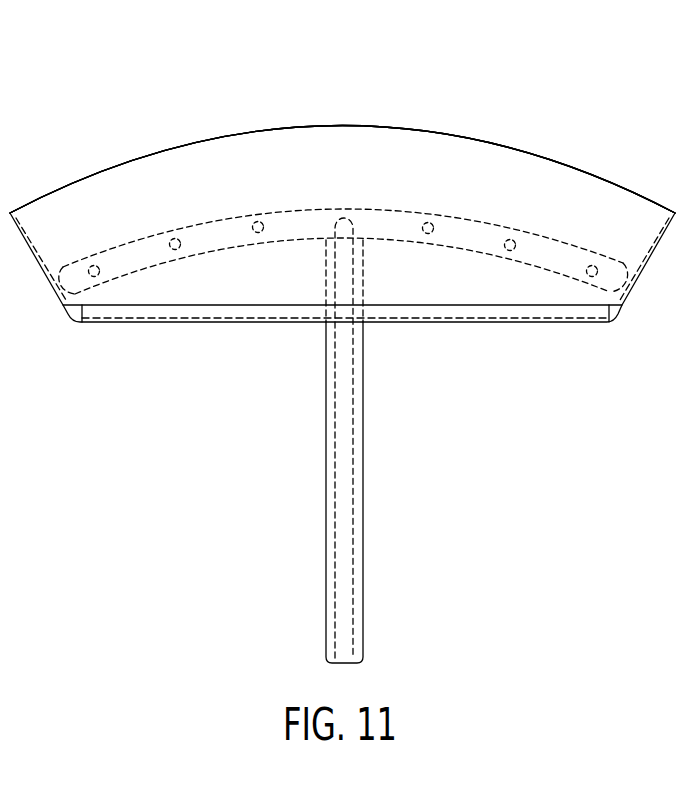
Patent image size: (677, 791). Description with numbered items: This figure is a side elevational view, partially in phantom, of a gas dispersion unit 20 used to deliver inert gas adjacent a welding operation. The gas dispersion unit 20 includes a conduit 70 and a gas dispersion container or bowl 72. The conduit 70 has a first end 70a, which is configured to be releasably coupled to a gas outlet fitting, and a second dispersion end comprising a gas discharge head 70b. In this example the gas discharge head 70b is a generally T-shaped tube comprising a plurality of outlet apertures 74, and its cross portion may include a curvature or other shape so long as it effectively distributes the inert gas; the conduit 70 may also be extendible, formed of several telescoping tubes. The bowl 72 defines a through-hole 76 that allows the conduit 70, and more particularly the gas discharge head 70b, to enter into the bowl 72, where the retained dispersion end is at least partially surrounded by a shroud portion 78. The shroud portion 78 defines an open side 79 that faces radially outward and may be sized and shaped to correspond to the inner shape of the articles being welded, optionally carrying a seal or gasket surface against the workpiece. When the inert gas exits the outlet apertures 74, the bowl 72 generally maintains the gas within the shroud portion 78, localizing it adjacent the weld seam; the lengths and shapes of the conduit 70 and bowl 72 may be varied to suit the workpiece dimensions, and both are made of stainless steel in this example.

The gas dispersion unit 20 is at (630, 148).
The conduit 70 is at (327, 594).
The first end 70a is at (364, 596).
The gas discharge head 70b is at (344, 210).
The gas dispersion bowl 72 is at (162, 149).
The outlet apertures 74 is at (162, 230).
The through-hole 76 is at (316, 324).
The shroud portion 78 is at (475, 160).
The open side 79 is at (247, 122).